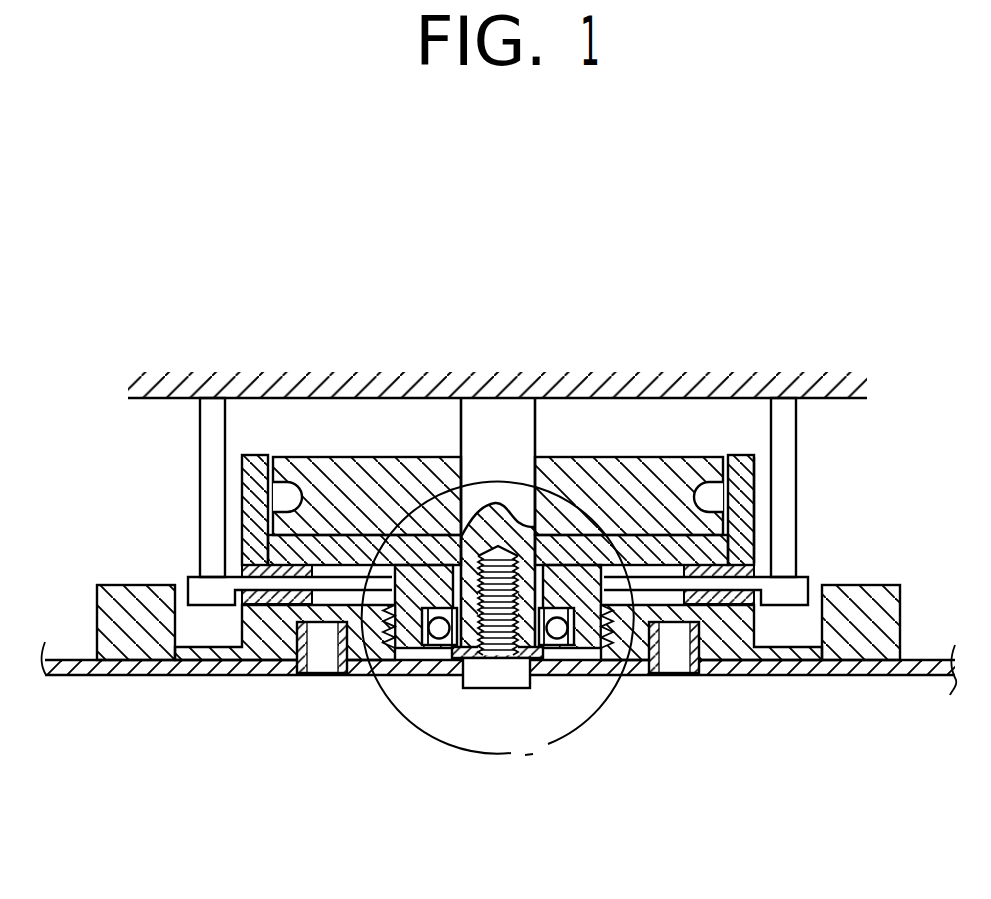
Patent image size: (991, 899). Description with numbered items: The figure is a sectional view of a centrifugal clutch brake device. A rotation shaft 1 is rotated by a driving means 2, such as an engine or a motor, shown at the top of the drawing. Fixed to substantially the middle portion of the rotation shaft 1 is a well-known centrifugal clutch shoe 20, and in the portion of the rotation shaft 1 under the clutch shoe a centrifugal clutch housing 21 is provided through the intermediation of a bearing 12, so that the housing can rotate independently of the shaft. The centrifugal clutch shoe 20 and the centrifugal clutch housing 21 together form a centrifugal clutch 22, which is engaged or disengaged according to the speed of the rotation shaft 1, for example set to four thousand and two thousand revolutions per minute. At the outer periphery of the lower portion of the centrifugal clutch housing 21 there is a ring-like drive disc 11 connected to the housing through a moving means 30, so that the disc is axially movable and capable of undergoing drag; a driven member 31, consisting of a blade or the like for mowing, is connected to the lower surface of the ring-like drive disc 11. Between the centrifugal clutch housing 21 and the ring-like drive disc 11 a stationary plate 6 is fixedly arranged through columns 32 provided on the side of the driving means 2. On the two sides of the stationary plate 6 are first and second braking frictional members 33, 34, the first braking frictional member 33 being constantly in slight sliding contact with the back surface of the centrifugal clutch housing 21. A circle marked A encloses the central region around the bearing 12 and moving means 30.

The rotation shaft 1 is at (500, 417).
The driving means 2 is at (286, 385).
The stationary plate 6 is at (808, 578).
The ring-like drive disc 11 is at (755, 627).
The bearing 12 is at (440, 648).
The centrifugal clutch shoe 20 is at (597, 473).
The centrifugal clutch housing 21 is at (752, 455).
The centrifugal clutch 22 is at (766, 477).
The moving means 30 is at (592, 668).
The driven member 31 is at (142, 678).
The columns 32 is at (786, 418).
The first braking frictional member 33 is at (758, 573).
The second braking frictional member 34 is at (760, 594).
The region A is at (548, 744).